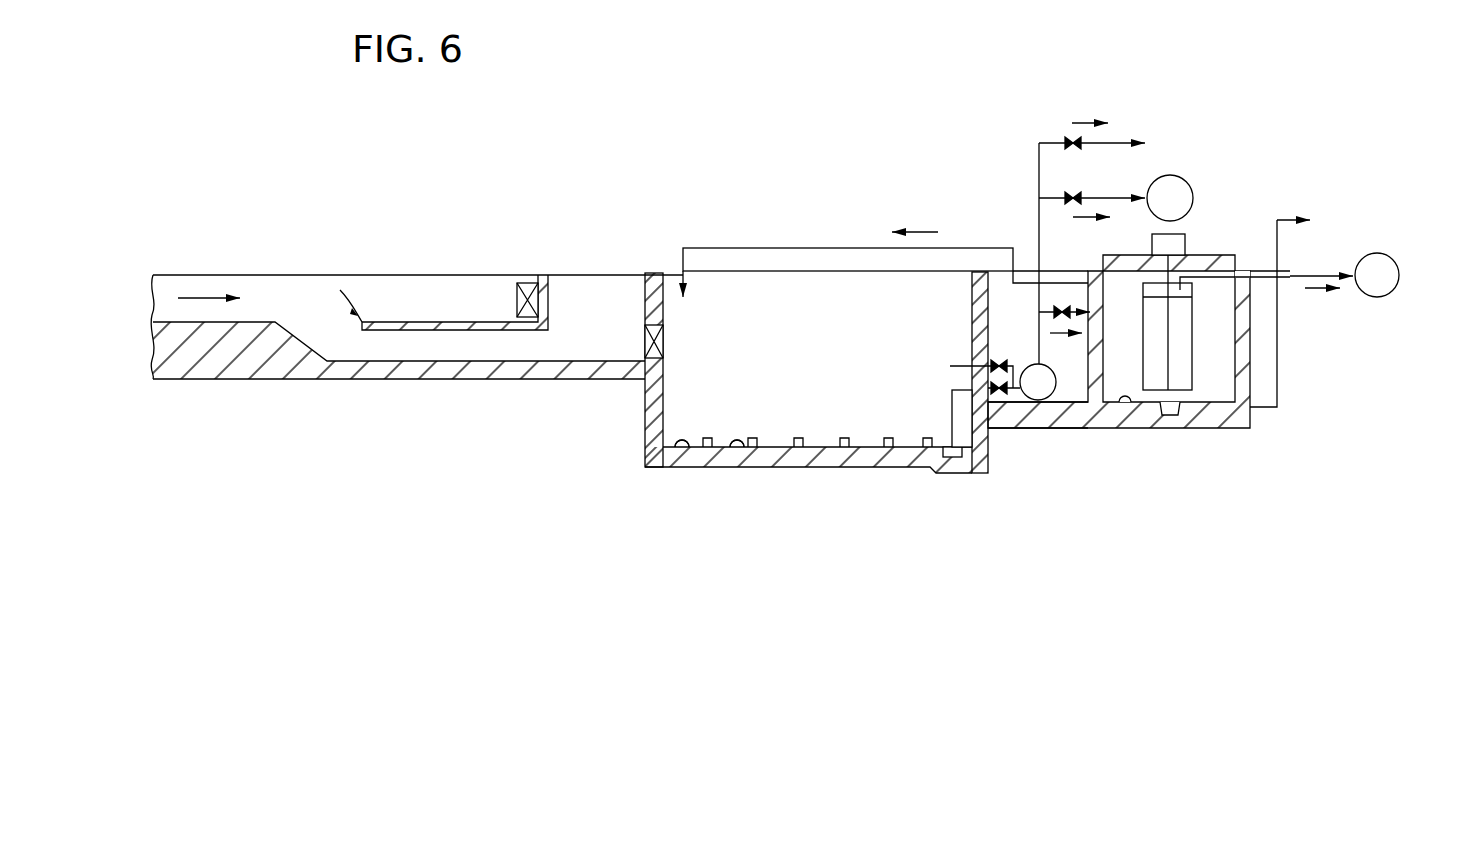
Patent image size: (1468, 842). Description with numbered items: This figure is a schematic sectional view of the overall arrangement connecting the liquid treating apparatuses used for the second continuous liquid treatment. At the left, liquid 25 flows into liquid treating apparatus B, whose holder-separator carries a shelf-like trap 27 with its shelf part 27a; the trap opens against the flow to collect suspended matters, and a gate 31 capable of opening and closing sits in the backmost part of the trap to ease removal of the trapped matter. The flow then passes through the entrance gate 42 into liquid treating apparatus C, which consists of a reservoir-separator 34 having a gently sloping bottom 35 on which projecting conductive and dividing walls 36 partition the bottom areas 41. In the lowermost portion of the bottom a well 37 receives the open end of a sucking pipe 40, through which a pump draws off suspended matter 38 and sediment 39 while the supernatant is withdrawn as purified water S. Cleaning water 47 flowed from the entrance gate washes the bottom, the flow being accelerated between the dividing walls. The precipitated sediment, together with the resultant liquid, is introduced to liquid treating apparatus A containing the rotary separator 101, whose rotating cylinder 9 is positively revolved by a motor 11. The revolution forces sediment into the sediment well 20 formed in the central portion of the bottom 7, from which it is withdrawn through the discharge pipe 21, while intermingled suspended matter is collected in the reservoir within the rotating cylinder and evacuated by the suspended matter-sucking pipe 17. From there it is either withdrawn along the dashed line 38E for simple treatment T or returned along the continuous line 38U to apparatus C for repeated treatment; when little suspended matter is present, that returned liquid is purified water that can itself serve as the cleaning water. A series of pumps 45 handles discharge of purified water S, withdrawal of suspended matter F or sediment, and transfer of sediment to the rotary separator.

The liquid 25 is at (172, 298).
The shelf part 27a is at (340, 290).
The shelf-like trap 27 is at (448, 305).
The gate 31 is at (528, 275).
The liquid treating apparatus B is at (533, 214).
The liquid treating apparatus C is at (857, 473).
The gate 42 is at (667, 331).
The reservoir-separator 34 is at (706, 376).
The conductive and dividing walls 36 is at (845, 447).
The bottom 35 is at (688, 467).
The bottom areas 41 is at (740, 467).
The well 37 is at (950, 473).
The sucking pipe 40 is at (952, 415).
The purified water S is at (962, 366).
The continuous line 38U is at (953, 247).
The cleaning water 47 is at (915, 232).
The suspended matter 38 is at (1078, 222).
The suspended matter F is at (1316, 290).
The treatment T is at (1193, 197).
The rotary separator 101 is at (1245, 372).
The series of pumps 45 is at (1037, 429).
The bottom 7 is at (1124, 409).
The sediment well 20 is at (1168, 416).
The motor 11 is at (1188, 240).
The rotating cylinder 9 is at (1193, 348).
The suspended matter-sucking pipe 17 is at (1297, 283).
The dashed line 38E is at (1320, 271).
The discharge pipe 21 is at (1285, 398).
The liquid treating apparatus A is at (1270, 445).
The sediment 39 is at (1062, 340).